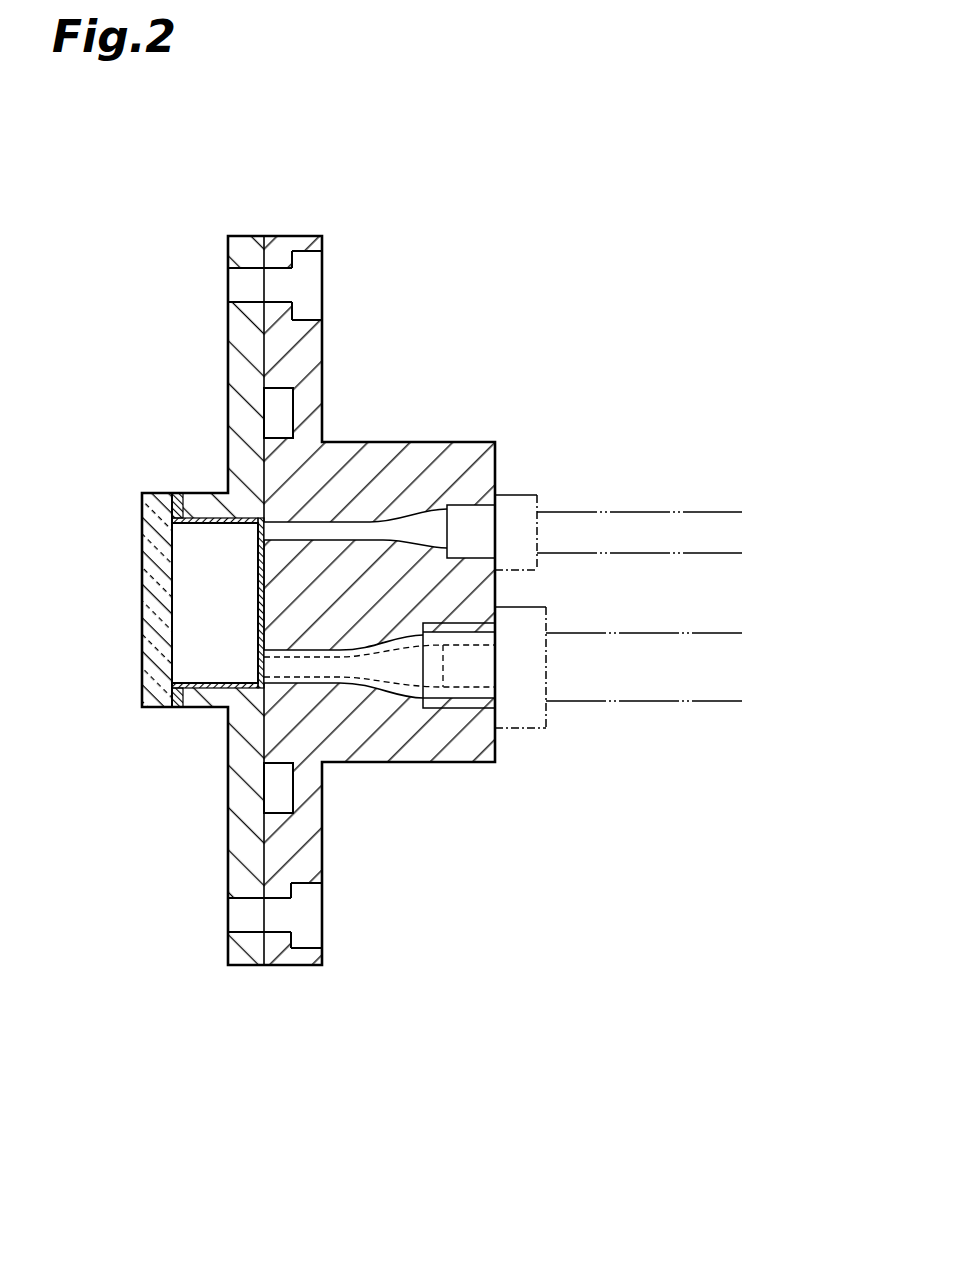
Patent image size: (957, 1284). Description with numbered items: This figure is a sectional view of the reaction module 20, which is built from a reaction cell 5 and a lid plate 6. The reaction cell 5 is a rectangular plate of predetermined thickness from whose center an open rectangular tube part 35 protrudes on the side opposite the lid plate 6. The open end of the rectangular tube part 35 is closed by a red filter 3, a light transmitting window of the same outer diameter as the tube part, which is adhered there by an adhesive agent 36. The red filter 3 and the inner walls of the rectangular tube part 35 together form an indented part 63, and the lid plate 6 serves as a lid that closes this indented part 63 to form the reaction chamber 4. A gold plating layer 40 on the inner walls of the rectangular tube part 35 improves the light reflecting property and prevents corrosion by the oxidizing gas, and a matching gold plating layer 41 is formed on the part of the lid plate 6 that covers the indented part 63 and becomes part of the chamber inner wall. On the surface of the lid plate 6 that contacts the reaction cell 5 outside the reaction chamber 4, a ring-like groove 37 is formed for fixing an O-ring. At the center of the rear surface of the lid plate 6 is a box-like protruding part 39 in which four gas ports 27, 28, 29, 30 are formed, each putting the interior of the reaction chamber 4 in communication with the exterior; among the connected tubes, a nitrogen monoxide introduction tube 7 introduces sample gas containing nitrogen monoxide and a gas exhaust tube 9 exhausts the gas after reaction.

The red filter 3 is at (145, 527).
The reaction chamber 4 is at (190, 620).
The reaction cell 5 is at (243, 222).
The lid plate 6 is at (292, 222).
The nitrogen monoxide introduction tube 7 is at (697, 523).
The gas exhaust tube 9 is at (707, 640).
The reaction module 20 is at (358, 998).
The gas port 27 is at (470, 538).
The gas port 28 is at (470, 536).
The gas port 29 is at (465, 684).
The gas port 30 is at (470, 655).
The rectangular tube part 35 is at (203, 500).
The adhesive agent 36 is at (177, 493).
The groove 37 is at (277, 410).
The protruding part 39 is at (432, 455).
The gold plating layer 40 is at (200, 524).
The gold plating layer 41 is at (258, 595).
The indented part 63 is at (183, 591).